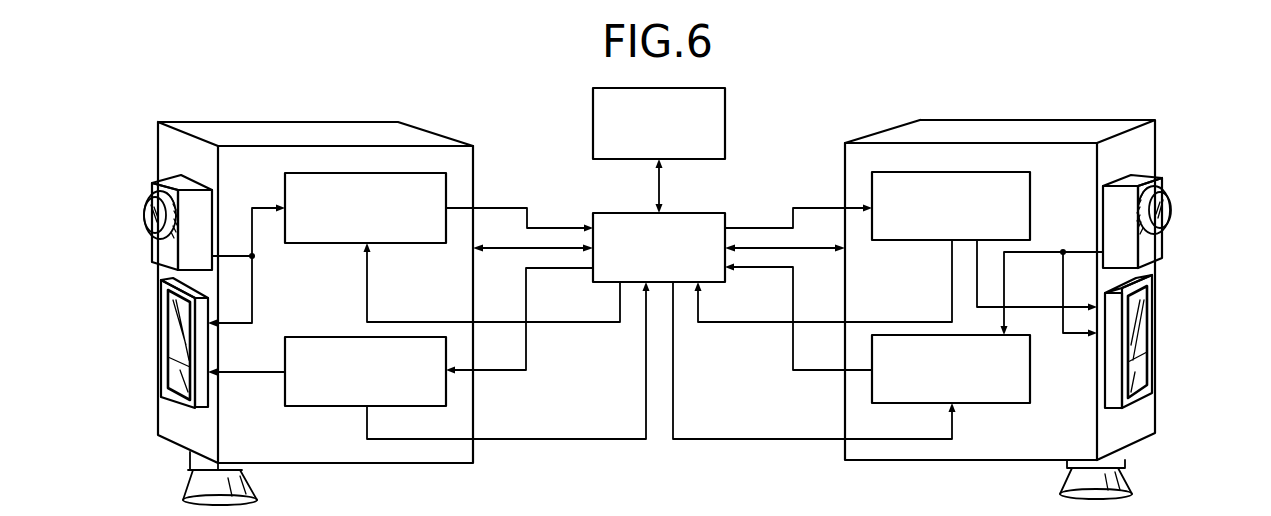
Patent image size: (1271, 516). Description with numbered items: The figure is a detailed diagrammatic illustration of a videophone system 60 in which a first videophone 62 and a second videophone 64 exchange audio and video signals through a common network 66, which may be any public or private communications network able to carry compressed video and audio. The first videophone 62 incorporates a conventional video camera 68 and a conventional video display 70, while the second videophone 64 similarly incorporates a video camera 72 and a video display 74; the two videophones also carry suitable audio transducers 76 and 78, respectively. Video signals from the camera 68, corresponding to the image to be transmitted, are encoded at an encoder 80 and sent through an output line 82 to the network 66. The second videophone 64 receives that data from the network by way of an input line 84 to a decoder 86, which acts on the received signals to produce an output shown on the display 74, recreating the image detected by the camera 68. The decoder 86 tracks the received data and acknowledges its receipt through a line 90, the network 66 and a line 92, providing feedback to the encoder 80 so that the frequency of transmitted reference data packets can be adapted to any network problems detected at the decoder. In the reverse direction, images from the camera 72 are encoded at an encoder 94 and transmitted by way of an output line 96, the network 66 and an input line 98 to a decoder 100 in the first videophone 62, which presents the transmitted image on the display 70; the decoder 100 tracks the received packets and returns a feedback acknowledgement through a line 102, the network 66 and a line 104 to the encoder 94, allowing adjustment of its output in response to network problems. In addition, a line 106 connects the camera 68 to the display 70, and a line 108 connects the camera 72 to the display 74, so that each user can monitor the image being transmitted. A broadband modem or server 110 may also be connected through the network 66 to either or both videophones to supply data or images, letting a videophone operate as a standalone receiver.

The videophone system 60 is at (844, 88).
The first videophone 62 is at (325, 128).
The second videophone 64 is at (990, 127).
The network 66 is at (690, 213).
The video camera 68 is at (146, 208).
The video display 70 is at (163, 337).
The video camera 72 is at (1170, 203).
The video display 74 is at (1155, 333).
The audio transducer 76 is at (182, 490).
The audio transducer 78 is at (1135, 486).
The encoder 80 is at (392, 244).
The output line 82 is at (498, 206).
The input line 84 is at (815, 206).
The decoder 86 is at (928, 242).
The line 90 is at (771, 322).
The line 92 is at (550, 322).
The encoder 94 is at (976, 404).
The output line 96 is at (812, 370).
The input line 98 is at (504, 370).
The decoder 100 is at (353, 337).
The line 102 is at (510, 440).
The line 104 is at (806, 440).
The line 106 is at (254, 268).
The line 108 is at (1062, 284).
The server 110 is at (726, 121).